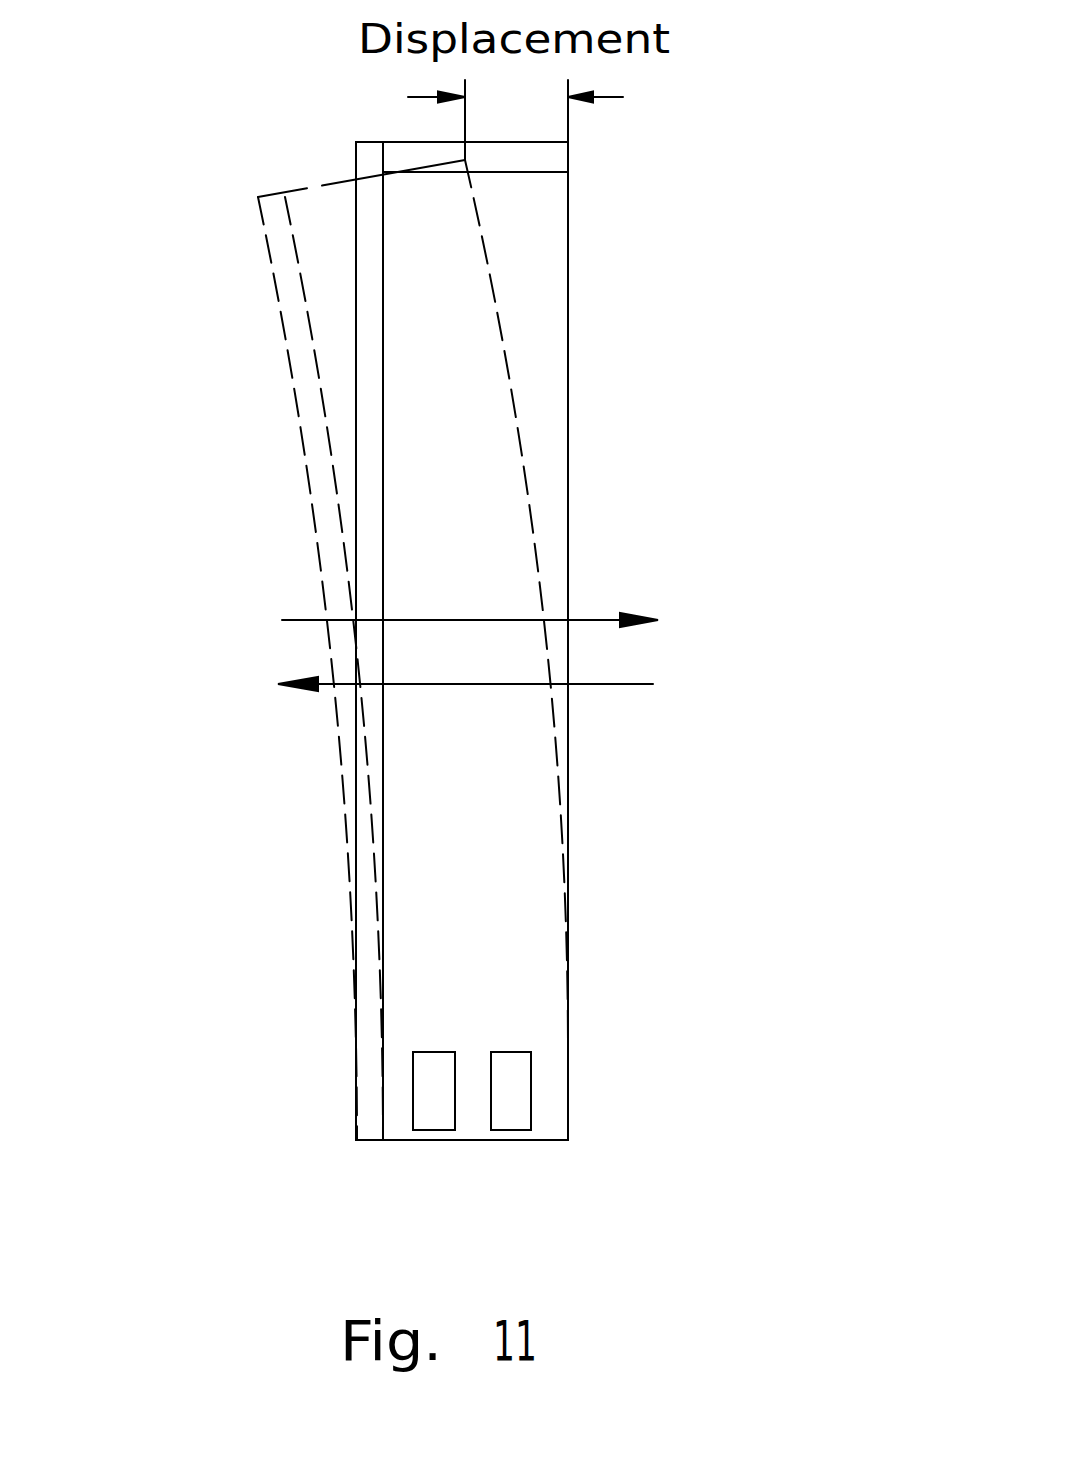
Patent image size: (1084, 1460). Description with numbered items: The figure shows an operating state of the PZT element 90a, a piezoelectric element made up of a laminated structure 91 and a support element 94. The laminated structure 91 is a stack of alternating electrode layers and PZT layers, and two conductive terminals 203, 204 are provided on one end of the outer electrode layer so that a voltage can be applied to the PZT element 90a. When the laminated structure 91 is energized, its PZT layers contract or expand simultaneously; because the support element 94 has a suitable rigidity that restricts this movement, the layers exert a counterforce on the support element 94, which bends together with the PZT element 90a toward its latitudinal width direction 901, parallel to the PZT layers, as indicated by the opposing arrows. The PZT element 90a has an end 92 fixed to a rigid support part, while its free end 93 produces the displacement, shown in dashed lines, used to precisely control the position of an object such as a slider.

The PZT element 90a is at (663, 329).
The laminated structure 91 is at (561, 958).
The end 92 is at (393, 1141).
The free end 93 is at (300, 188).
The support element 94 is at (282, 329).
The width direction 901 is at (653, 683).
The conductive terminal 203 is at (517, 1113).
The conductive terminal 204 is at (432, 1113).